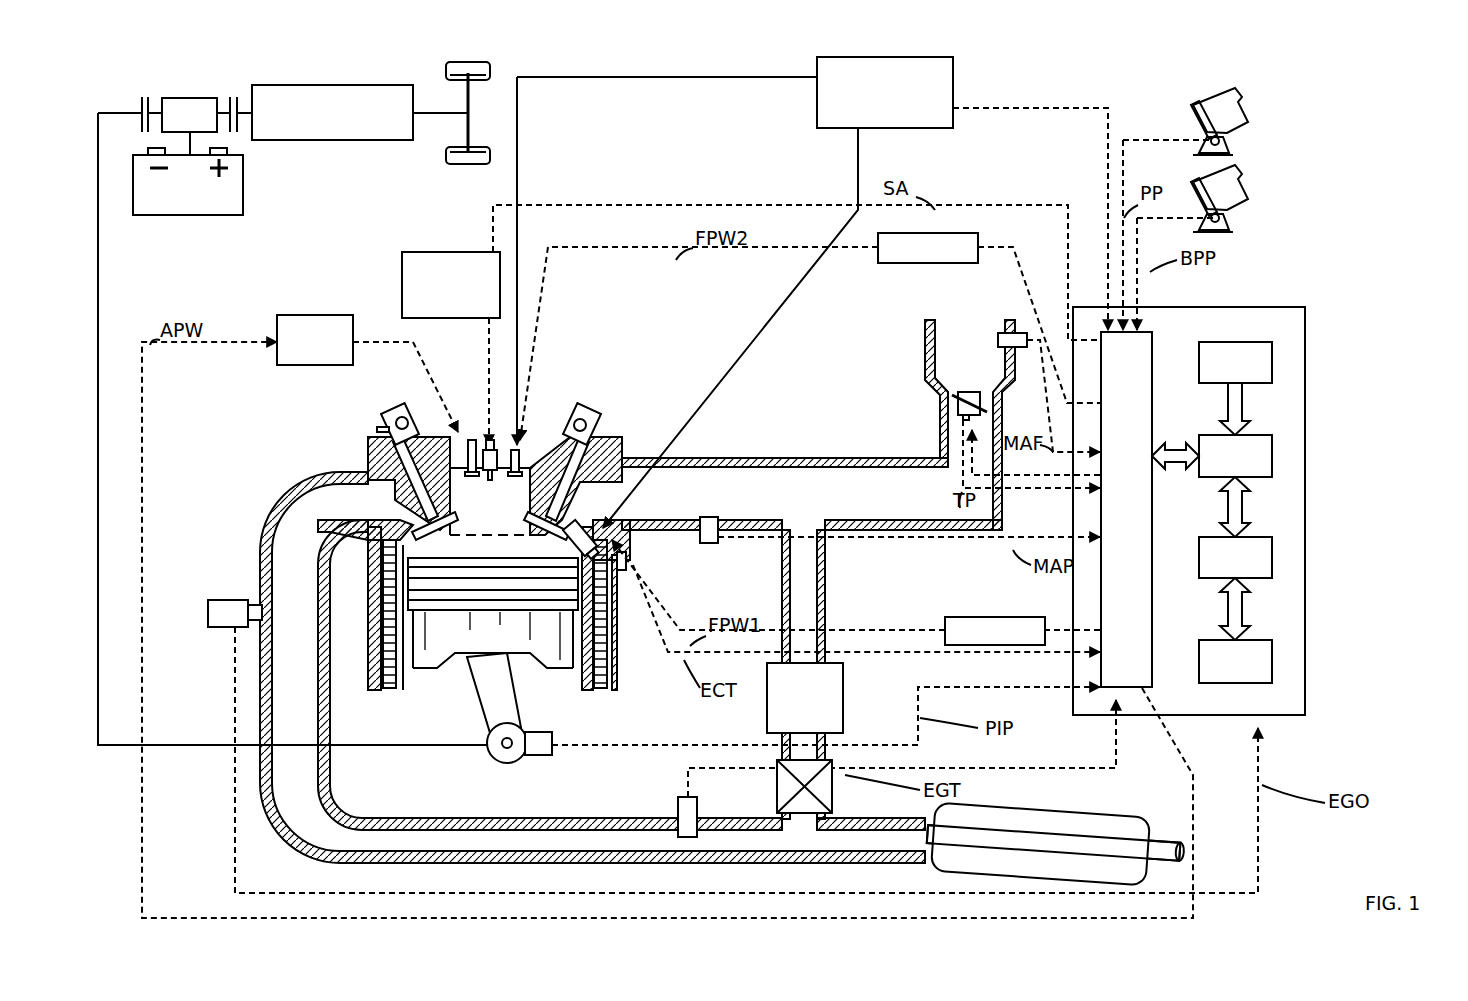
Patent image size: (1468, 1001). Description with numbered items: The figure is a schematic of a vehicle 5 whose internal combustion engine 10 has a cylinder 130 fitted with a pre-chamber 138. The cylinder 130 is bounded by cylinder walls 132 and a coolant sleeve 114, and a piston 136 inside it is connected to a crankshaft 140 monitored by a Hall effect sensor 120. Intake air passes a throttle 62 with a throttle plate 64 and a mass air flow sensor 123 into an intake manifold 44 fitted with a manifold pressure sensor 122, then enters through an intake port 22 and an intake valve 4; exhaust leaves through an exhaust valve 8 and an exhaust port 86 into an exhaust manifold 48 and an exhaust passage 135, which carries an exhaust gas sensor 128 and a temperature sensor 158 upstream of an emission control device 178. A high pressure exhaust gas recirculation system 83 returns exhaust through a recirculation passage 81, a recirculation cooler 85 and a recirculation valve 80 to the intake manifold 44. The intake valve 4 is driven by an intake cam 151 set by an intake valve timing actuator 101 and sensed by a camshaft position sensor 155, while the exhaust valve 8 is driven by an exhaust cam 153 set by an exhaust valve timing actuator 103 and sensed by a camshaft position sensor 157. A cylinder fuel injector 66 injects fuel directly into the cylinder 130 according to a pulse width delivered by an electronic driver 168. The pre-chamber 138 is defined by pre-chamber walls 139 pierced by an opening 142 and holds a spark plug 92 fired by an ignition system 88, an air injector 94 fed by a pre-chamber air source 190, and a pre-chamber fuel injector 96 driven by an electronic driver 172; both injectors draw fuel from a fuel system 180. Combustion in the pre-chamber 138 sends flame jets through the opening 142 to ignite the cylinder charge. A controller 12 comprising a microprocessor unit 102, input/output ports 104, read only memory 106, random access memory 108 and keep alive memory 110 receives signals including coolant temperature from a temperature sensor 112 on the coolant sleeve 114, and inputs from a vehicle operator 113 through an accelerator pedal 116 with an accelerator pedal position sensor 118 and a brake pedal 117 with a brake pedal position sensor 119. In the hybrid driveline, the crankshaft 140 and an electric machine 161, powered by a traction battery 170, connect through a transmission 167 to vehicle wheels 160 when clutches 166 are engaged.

The electric machine 161 is at (167, 97).
The clutch 166 is at (141, 100).
The transmission 167 is at (390, 140).
The vehicle wheels 160 is at (468, 164).
The traction battery 170 is at (184, 215).
The internal combustion engine 10 is at (348, 283).
The vehicle 5 is at (1410, 96).
The ignition system 88 is at (424, 252).
The high pressure fuel system 180 is at (953, 74).
The electronic driver 172 is at (976, 233).
The accelerator pedal 116 is at (1200, 118).
The brake pedal 117 is at (1200, 195).
The vehicle operator 113 is at (1245, 105).
The accelerator pedal position sensor 118 is at (1230, 141).
The brake pedal position sensor 119 is at (1230, 218).
The controller 12 is at (1214, 497).
The input/output ports 104 is at (1155, 332).
The read only memory 106 is at (1272, 358).
The microprocessor unit 102 is at (1272, 450).
The random access memory 108 is at (1272, 560).
The keep alive memory 110 is at (1272, 658).
The exhaust manifold 48 is at (592, 667).
The exhaust passage 135 is at (420, 864).
The exhaust port 86 is at (345, 501).
The exhaust gas sensor 128 is at (225, 600).
The intake valve 4 is at (548, 450).
The intake port 22 is at (648, 496).
The pre-chamber walls 139 is at (486, 540).
The cylinder 130 is at (400, 545).
The cylinder walls 132 is at (388, 690).
The coolant sleeve 114 is at (619, 672).
The temperature sensor 112 is at (627, 567).
The pre-chamber 138 is at (410, 590).
The opening 142 is at (410, 605).
The piston 136 is at (468, 642).
The crankshaft 140 is at (497, 762).
The Hall effect sensor 120 is at (540, 760).
The exhaust valve 8 is at (425, 522).
The camshaft position sensor 157 is at (386, 430).
The exhaust valve timing actuator 103 is at (397, 410).
The exhaust cam 153 is at (405, 410).
The intake valve timing actuator 101 is at (588, 413).
The intake cam 151 is at (580, 418).
The camshaft position sensor 155 is at (600, 430).
The spark plug 92 is at (483, 447).
The air injector 94 is at (467, 445).
The pre-chamber fuel injector 96 is at (518, 455).
The cylinder fuel injector 66 is at (583, 525).
The pre-chamber air source 190 is at (277, 330).
The intake manifold 44 is at (818, 425).
The throttle 62 is at (986, 406).
The throttle plate 64 is at (943, 405).
The mass air flow sensor 123 is at (1005, 333).
The MAP sensor 122 is at (708, 544).
The EGR passage 81 is at (782, 583).
The high pressure EGR system 83 is at (850, 600).
The EGR cooler 85 is at (843, 690).
The electronic driver 168 is at (950, 617).
The EGR valve 80 is at (777, 798).
The temperature sensor 158 is at (678, 804).
The emission control device 178 is at (1110, 810).